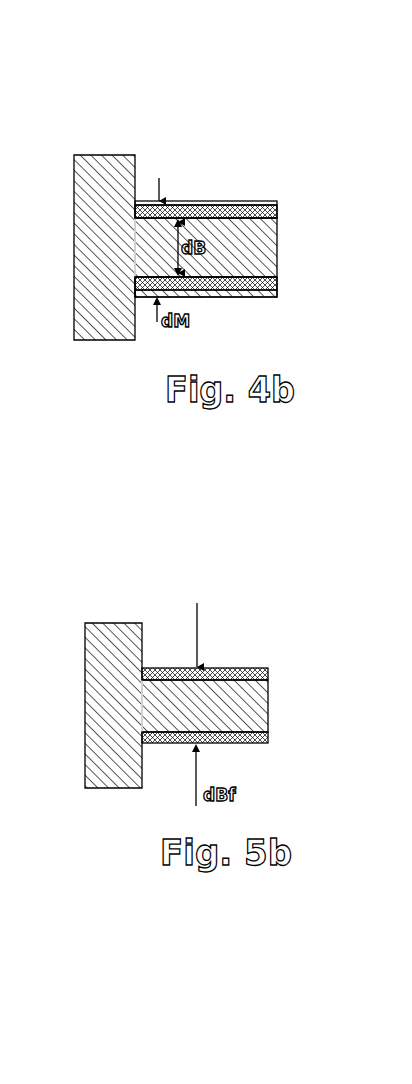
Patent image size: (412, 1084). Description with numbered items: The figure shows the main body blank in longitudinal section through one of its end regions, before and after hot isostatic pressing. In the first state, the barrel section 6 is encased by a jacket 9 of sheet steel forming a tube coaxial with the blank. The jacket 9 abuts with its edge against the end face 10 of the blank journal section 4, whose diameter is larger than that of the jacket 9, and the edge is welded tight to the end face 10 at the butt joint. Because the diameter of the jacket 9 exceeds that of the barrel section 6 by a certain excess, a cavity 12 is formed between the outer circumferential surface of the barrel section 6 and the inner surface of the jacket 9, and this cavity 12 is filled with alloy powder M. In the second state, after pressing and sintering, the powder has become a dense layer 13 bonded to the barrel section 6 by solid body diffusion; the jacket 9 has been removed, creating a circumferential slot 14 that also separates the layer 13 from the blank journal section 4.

In FIG. 4B, the blank journal section 4 is at (102, 165).
In FIG. 5B, the blank journal section 4 is at (110, 627).
In FIG. 4B, the barrel section 6 is at (255, 248).
In FIG. 5B, the barrel section 6 is at (250, 702).
In FIG. 4B, the jacket 9 is at (202, 201).
In FIG. 4B, the alloy powder M is at (245, 215).
In FIG. 4B, the end face 10 is at (137, 170).
In FIG. 4B, the cavity 12 is at (279, 283).
In FIG. 5B, the layer 13 is at (220, 668).
In FIG. 5B, the circumferential slot 14 is at (146, 665).